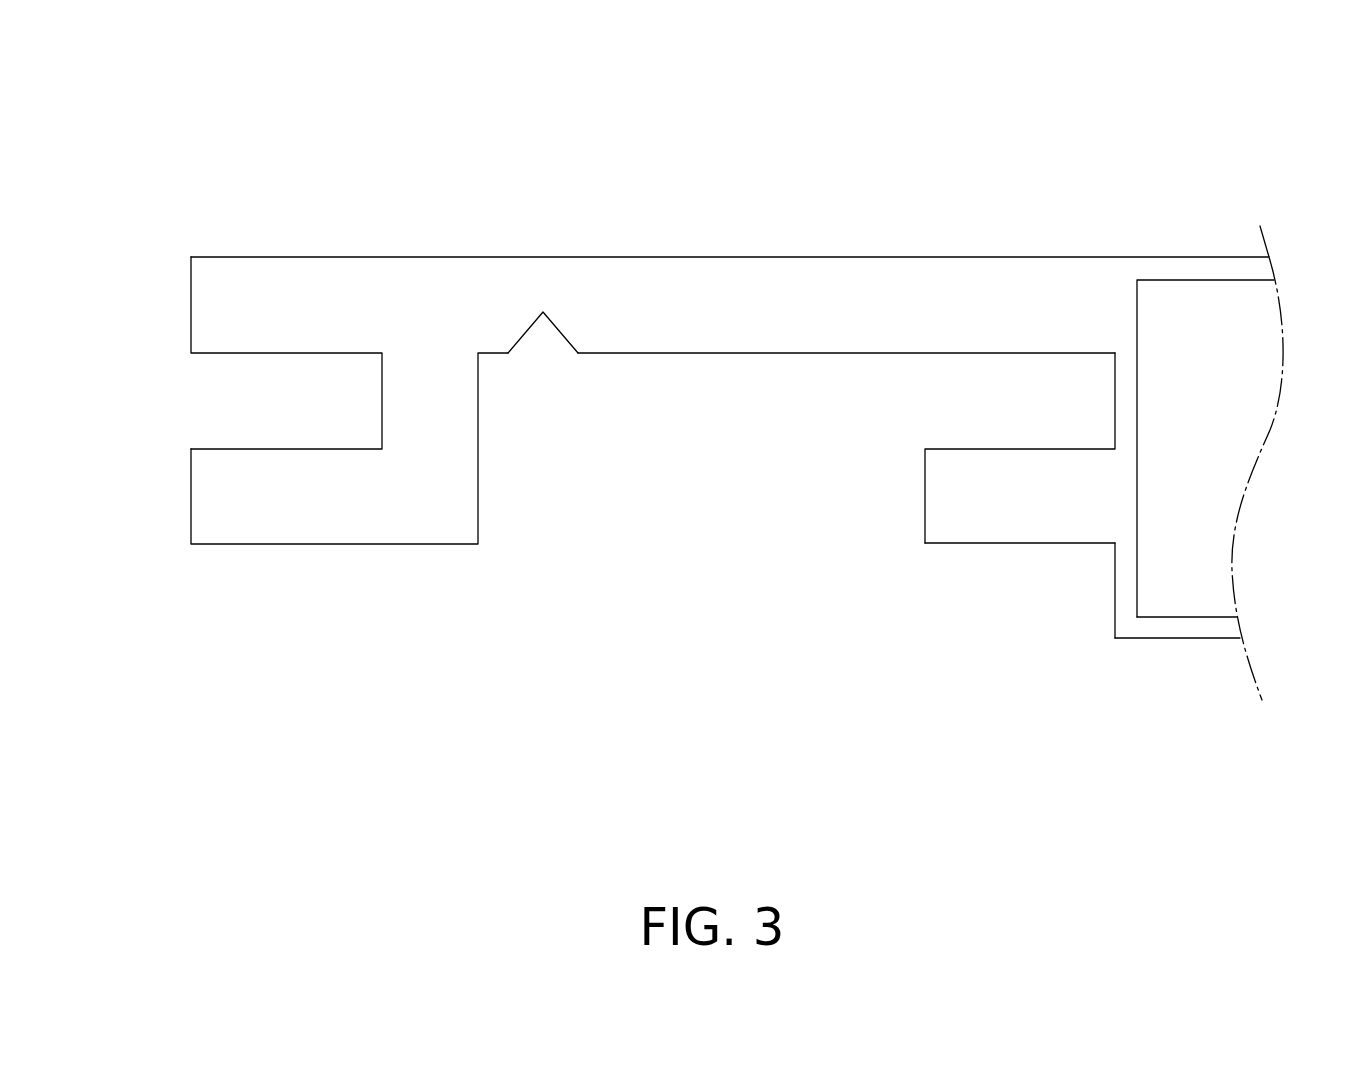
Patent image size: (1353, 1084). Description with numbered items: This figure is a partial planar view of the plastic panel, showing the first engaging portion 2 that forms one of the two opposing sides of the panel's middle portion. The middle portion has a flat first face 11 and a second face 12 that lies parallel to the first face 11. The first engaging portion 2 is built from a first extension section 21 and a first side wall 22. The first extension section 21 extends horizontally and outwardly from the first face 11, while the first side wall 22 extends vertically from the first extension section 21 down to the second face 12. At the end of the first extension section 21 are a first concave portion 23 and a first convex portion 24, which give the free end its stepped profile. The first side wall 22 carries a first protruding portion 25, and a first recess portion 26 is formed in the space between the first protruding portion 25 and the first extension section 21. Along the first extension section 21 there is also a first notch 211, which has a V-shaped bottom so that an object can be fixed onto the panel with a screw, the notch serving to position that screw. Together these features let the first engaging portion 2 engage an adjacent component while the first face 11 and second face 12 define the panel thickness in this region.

The first engaging portion 2 is at (471, 208).
The first extension section 21 is at (690, 257).
The first notch 211 is at (527, 343).
The first side wall 22 is at (1113, 597).
The first concave portion 23 is at (210, 405).
The first convex portion 24 is at (270, 510).
The first protruding portion 25 is at (995, 527).
The first recess portion 26 is at (977, 396).
The first face 11 is at (1169, 257).
The second face 12 is at (1188, 640).